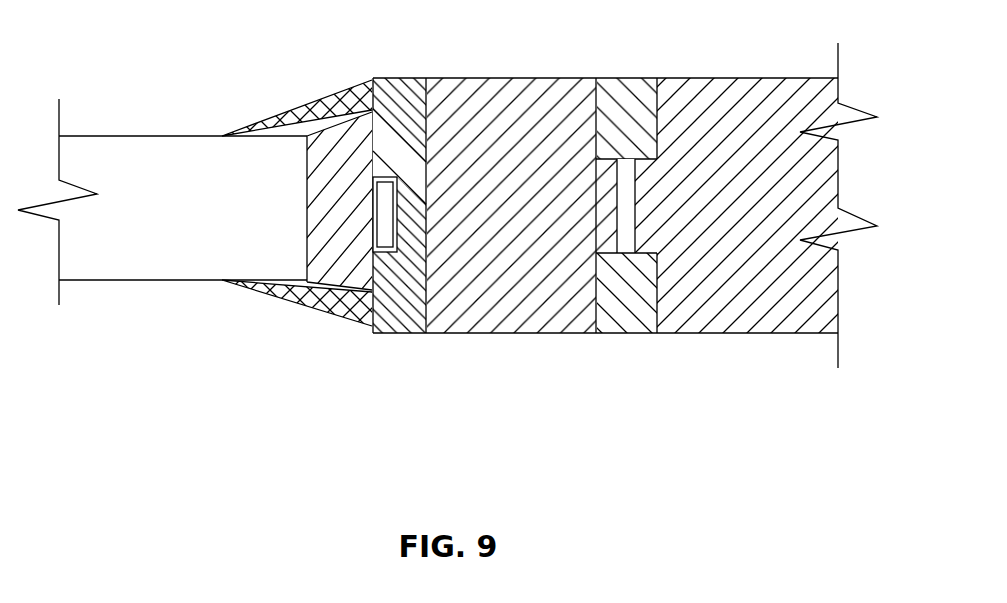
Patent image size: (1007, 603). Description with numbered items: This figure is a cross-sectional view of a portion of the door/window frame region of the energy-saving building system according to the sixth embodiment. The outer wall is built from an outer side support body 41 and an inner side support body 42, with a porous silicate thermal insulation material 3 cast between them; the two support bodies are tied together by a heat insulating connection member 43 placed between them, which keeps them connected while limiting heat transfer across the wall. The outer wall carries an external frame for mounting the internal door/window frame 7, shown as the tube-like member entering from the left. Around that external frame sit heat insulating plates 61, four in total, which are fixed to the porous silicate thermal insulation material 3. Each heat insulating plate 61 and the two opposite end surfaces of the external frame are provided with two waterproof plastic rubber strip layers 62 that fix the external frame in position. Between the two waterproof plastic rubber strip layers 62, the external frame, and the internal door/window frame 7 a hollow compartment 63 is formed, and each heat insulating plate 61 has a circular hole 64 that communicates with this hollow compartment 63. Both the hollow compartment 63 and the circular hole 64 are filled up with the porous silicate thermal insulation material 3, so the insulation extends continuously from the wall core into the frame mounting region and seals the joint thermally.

The porous silicate thermal insulation material 3 is at (503, 307).
The internal door/window frame 7 is at (207, 207).
The outer side support body 41 is at (616, 143).
The inner side support body 42 is at (648, 313).
The heat insulating connection member 43 is at (625, 218).
The heat insulating plate 61 is at (420, 300).
The waterproof plastic rubber strip layer 62 is at (278, 285).
The hollow compartment 63 is at (318, 302).
The circular hole 64 is at (374, 268).